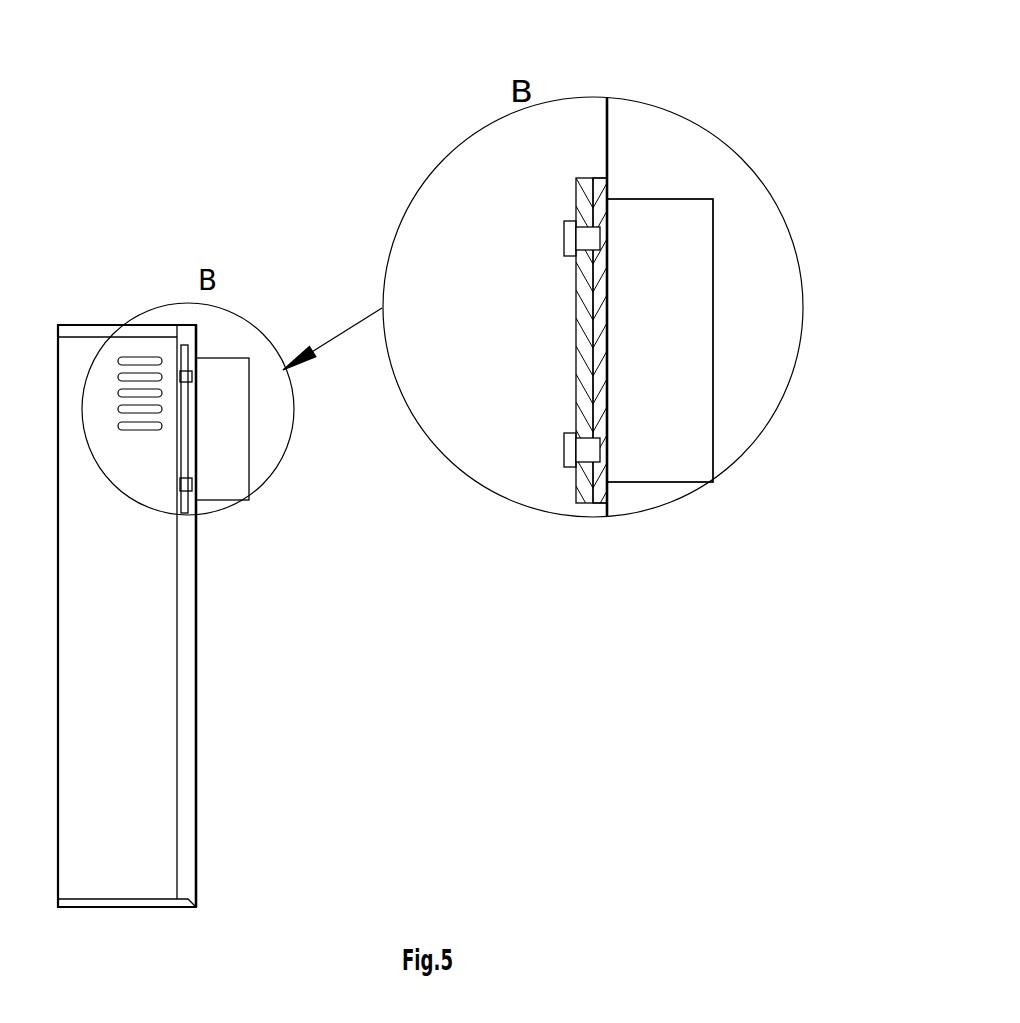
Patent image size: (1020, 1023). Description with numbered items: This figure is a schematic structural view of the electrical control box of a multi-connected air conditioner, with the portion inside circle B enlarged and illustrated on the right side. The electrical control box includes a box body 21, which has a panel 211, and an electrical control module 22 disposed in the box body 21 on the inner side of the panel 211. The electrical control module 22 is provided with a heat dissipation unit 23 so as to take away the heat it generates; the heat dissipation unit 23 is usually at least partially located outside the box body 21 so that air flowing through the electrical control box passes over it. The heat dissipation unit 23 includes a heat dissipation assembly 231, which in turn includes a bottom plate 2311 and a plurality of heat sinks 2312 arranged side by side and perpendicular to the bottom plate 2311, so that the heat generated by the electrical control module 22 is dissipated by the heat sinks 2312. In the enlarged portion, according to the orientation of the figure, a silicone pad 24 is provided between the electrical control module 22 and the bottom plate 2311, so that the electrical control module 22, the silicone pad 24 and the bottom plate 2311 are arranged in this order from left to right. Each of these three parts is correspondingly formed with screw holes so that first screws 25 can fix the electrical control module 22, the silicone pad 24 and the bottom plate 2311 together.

The box body 21 is at (143, 679).
The panel 211 is at (196, 722).
The electrical control module 22 is at (581, 211).
The heat dissipation unit 23 is at (230, 398).
The heat dissipation assembly 231 is at (801, 238).
The bottom plate 2311 is at (595, 285).
The heat sinks 2312 is at (685, 356).
The silicone pad 24 is at (590, 388).
The first screws 25 is at (569, 452).